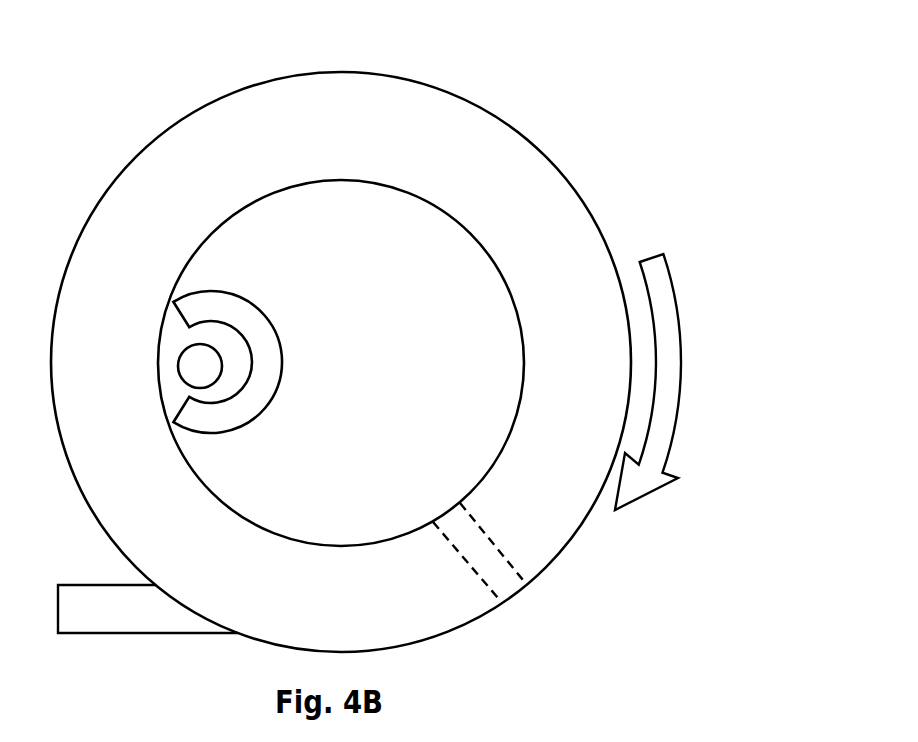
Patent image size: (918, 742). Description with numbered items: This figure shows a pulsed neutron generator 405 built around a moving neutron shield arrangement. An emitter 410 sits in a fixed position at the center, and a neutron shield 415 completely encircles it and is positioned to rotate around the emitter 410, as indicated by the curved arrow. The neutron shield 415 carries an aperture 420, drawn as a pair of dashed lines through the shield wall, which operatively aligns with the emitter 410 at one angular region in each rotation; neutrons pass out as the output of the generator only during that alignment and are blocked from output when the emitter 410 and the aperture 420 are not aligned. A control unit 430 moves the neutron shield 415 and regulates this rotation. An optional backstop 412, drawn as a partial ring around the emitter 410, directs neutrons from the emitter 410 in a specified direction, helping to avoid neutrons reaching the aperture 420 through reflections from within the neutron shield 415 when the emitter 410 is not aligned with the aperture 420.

The pulsed neutron generator 405 is at (670, 193).
The emitter 410 is at (205, 358).
The backstop 412 is at (268, 360).
The neutron shield 415 is at (545, 172).
The aperture 420 is at (513, 595).
The control unit 430 is at (167, 618).